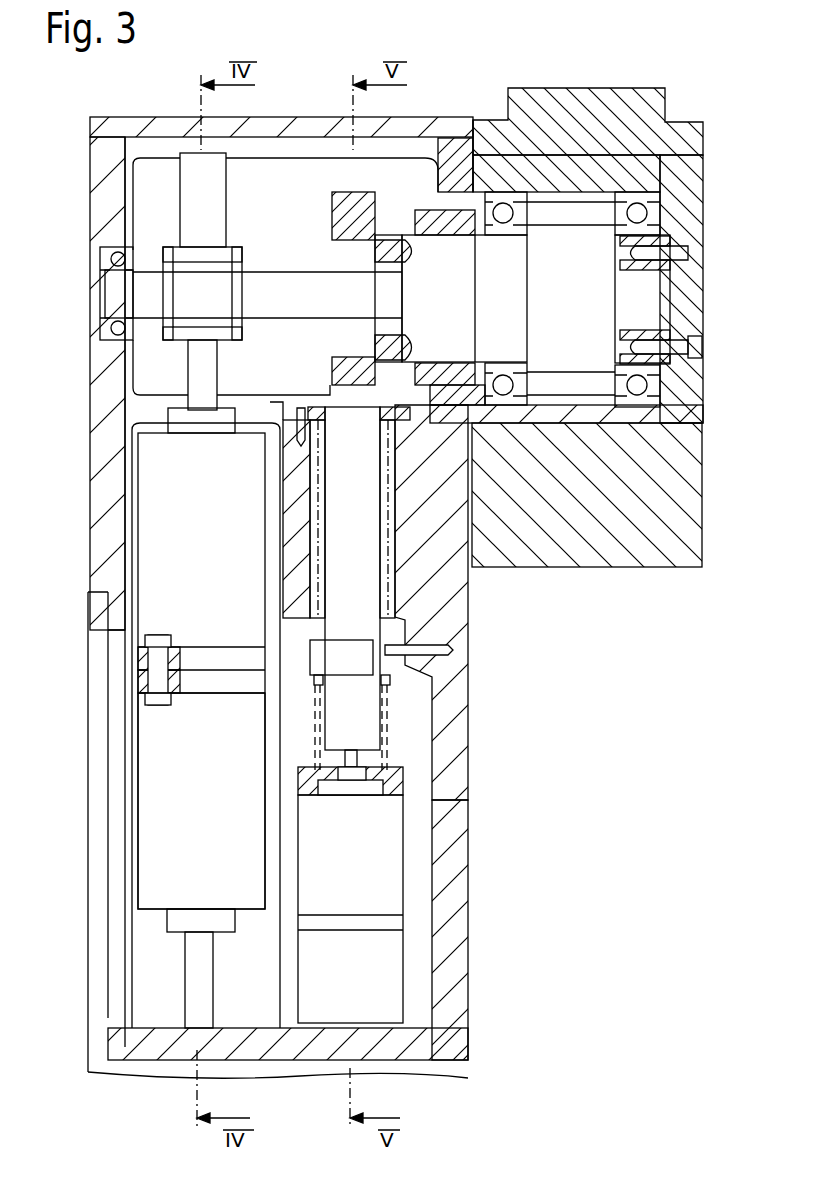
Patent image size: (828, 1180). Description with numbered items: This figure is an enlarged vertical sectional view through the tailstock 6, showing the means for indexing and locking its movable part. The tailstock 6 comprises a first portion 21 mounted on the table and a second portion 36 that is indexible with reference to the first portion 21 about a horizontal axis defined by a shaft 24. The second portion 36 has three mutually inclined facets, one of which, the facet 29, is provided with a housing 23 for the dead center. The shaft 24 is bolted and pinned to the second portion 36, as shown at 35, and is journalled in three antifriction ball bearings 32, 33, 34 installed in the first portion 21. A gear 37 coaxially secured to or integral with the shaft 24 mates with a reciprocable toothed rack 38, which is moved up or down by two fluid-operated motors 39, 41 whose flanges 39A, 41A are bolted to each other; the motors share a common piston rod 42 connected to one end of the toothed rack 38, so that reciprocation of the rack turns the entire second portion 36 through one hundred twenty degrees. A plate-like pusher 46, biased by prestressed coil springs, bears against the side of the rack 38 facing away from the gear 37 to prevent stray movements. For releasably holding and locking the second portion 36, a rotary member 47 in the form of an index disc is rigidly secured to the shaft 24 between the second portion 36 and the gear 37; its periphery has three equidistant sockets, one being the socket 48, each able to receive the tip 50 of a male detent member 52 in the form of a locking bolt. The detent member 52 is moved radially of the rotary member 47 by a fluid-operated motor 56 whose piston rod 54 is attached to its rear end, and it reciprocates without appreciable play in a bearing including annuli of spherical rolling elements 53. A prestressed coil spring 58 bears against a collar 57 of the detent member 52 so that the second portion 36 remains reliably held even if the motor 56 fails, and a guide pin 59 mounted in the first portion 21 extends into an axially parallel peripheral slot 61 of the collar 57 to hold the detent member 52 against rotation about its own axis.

The tailstock 6 is at (570, 698).
The first portion 21 is at (452, 942).
The housing 23 is at (632, 110).
The shaft 24 is at (655, 300).
The facet 29 is at (690, 149).
The antifriction ball bearing 32 is at (100, 348).
The antifriction ball bearing 33 is at (500, 207).
The antifriction ball bearing 34 is at (645, 400).
The bolted and pinned connection 35 is at (697, 347).
The second portion 36 is at (675, 488).
The gear 37 is at (175, 265).
The toothed rack 38 is at (190, 175).
The fluid-operated motor 39 is at (150, 543).
The flange 39A is at (190, 650).
The fluid-operated motor 41 is at (165, 747).
The flange 41A is at (227, 697).
The piston rod 42 is at (202, 367).
The pusher 46 is at (170, 247).
The rotary member 47 is at (363, 210).
The socket 48 is at (333, 392).
The tip 50 is at (350, 412).
The detent member 52 is at (363, 568).
The spherical rolling elements 53 is at (325, 460).
The piston rod 54 is at (353, 757).
The fluid-operated motor 56 is at (385, 840).
The collar 57 is at (320, 658).
The prestressed coil spring 58 is at (387, 728).
The guide pin 59 is at (427, 650).
The peripheral slot 61 is at (388, 667).